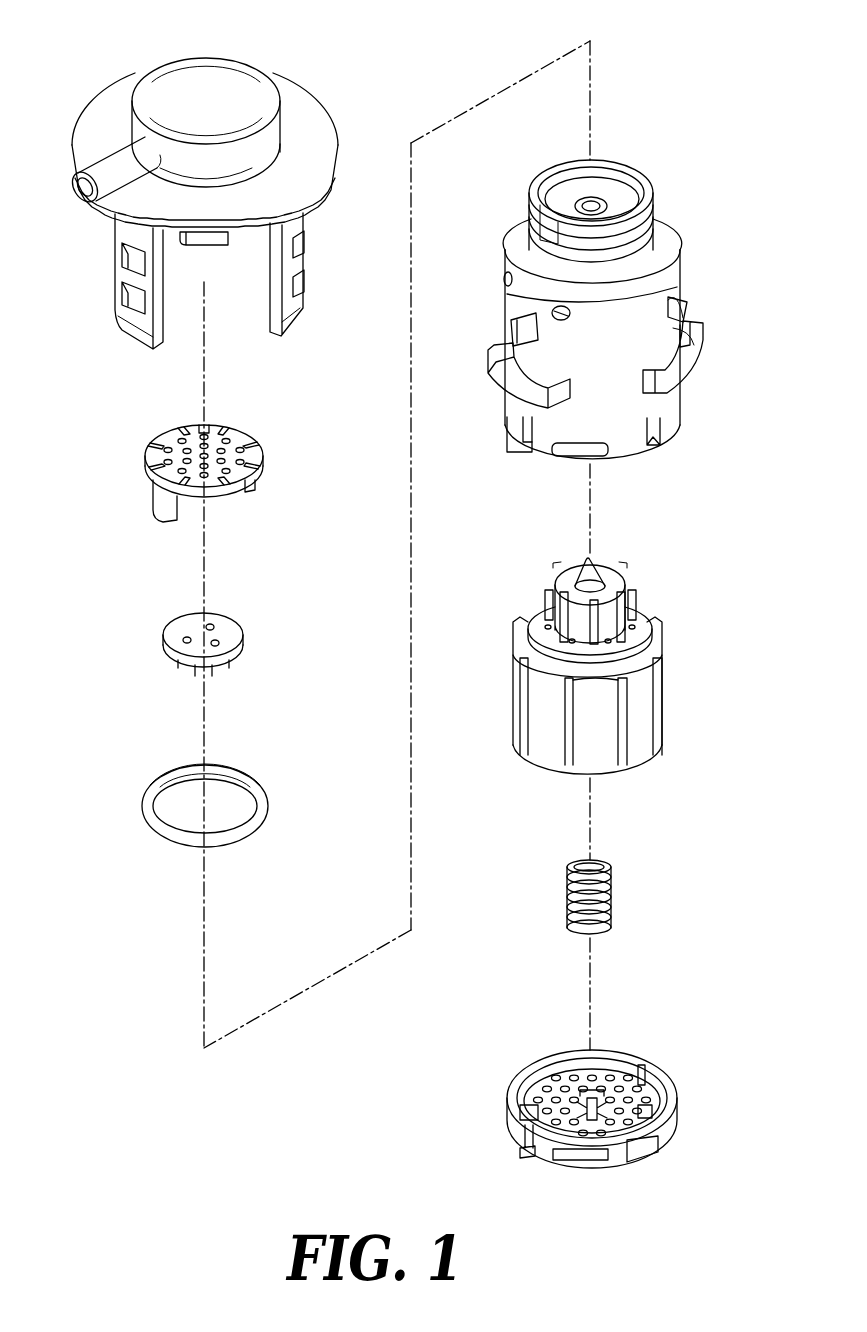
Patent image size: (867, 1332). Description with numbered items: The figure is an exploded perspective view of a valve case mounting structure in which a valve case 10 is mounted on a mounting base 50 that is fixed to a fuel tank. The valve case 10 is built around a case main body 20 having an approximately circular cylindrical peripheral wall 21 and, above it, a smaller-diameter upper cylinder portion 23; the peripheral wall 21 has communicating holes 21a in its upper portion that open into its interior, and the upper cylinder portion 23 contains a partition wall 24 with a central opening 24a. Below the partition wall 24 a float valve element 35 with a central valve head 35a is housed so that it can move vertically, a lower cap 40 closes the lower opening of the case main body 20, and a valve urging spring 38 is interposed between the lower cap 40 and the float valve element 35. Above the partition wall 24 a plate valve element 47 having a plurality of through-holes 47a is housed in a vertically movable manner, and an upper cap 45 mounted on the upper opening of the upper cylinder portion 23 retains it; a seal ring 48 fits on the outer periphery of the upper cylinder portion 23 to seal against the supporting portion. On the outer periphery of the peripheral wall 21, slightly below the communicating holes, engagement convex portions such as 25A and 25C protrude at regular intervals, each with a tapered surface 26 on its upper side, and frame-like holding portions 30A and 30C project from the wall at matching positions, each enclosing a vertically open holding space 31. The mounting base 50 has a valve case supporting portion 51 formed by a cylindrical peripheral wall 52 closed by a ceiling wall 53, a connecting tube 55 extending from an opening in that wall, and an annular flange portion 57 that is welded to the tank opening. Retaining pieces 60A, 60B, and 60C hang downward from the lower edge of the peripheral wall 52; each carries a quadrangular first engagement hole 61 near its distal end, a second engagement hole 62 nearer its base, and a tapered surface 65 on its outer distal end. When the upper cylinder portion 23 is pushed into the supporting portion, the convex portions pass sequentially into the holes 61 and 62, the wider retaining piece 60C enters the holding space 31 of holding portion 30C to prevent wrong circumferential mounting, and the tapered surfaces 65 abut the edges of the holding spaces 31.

The valve case 10 is at (98, 868).
The case main body 20 is at (526, 457).
The peripheral wall 21 is at (663, 412).
The communicating holes 21a is at (505, 277).
The upper cylinder portion 23 is at (653, 197).
The partition wall 24 is at (615, 190).
The opening 24a is at (595, 198).
The engagement convex portion 25A is at (516, 324).
The engagement convex portion 25C is at (674, 297).
The tapered surface 26 is at (512, 336).
The holding portion 30A is at (489, 368).
The holding portion 30C is at (692, 362).
The holding space 31 is at (507, 414).
The float valve element 35 is at (650, 690).
The valve head 35a is at (593, 577).
The valve urging spring 38 is at (612, 898).
The lower cap 40 is at (510, 1143).
The upper cap 45 is at (163, 510).
The plate valve element 47 is at (230, 630).
The through-holes 47a is at (212, 625).
The seal ring 48 is at (263, 808).
The mounting base 50 is at (160, 58).
The valve case supporting portion 51 is at (265, 13).
The peripheral wall 52 is at (272, 140).
The ceiling wall 53 is at (228, 80).
The connecting tube 55 is at (110, 158).
The flange portion 57 is at (322, 148).
The retaining piece 60A is at (120, 273).
The retaining piece 60B is at (215, 243).
The retaining piece 60C is at (305, 248).
The first engagement hole 61 is at (122, 292).
The second engagement hole 62 is at (122, 253).
The tapered surface 65 is at (133, 327).